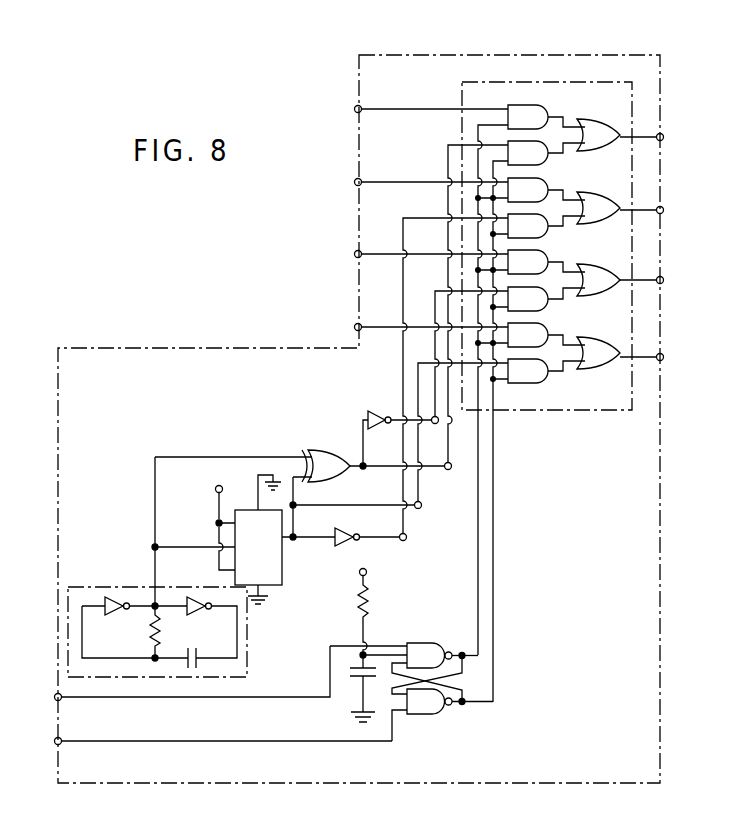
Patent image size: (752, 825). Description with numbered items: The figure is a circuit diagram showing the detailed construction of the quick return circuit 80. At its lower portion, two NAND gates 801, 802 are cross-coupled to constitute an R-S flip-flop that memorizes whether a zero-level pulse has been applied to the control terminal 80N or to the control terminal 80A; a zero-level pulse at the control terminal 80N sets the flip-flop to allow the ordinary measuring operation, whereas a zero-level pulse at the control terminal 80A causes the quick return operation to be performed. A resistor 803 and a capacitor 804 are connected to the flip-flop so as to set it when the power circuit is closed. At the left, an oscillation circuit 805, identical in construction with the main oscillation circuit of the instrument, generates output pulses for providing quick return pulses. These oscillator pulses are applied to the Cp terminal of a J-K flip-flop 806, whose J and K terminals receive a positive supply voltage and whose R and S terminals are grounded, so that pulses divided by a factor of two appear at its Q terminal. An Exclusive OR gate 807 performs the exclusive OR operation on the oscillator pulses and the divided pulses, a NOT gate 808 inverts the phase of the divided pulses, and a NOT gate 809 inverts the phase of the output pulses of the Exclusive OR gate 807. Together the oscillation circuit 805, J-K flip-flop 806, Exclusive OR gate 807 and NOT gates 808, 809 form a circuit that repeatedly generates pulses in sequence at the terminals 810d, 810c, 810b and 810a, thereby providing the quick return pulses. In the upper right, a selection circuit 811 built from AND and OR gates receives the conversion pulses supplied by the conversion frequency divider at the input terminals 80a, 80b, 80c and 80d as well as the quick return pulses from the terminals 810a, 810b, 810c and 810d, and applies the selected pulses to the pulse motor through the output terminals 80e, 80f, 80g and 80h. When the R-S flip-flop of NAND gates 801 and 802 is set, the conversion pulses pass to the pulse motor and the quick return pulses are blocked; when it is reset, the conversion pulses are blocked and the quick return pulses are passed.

The quick return circuit 80 is at (358, 100).
The input terminal 80a is at (355, 109).
The input terminal 80b is at (355, 182).
The input terminal 80c is at (356, 250).
The input terminal 80d is at (355, 326).
The output terminal 80e is at (664, 137).
The output terminal 80f is at (664, 210).
The output terminal 80g is at (664, 280).
The output terminal 80h is at (664, 357).
The control terminal 80N is at (54, 694).
The control terminal 80A is at (54, 738).
The NAND gate 801 is at (421, 655).
The NAND gate 802 is at (430, 716).
The resistor 803 is at (366, 608).
The capacitor 804 is at (353, 686).
The oscillation circuit 805 is at (128, 608).
The J-K flip-flop 806 is at (283, 577).
The Exclusive OR gate 807 is at (338, 455).
The NOT gate 808 is at (347, 542).
The NOT gate 809 is at (386, 416).
The terminal 810a is at (451, 469).
The terminal 810b is at (405, 541).
The terminal 810c is at (445, 429).
The terminal 810d is at (421, 508).
The selection circuit 811 is at (634, 396).